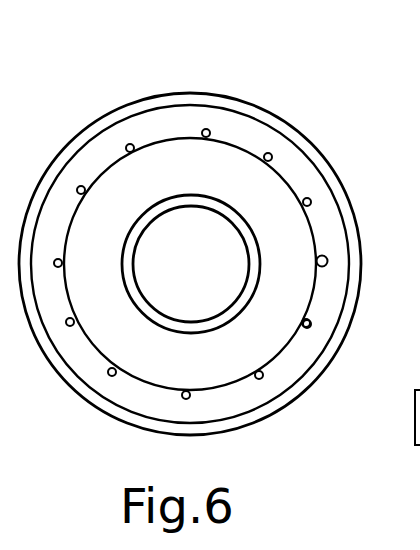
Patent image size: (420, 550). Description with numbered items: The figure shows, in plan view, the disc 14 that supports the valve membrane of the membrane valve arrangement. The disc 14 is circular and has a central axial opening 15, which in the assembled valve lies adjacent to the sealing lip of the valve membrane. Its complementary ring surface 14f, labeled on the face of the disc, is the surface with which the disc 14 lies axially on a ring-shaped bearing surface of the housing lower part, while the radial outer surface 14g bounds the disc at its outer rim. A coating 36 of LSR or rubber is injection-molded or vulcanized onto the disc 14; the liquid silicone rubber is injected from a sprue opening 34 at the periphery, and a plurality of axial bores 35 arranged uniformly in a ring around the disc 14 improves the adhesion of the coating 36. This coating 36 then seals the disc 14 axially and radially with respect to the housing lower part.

The disc 14 is at (255, 348).
The complementary ring surface 14f is at (210, 370).
The radial outer surface 14g is at (194, 92).
The axial opening 15 is at (143, 298).
The sprue opening 34 is at (328, 262).
The axial bores 35 is at (190, 398).
The coating 36 is at (272, 146).